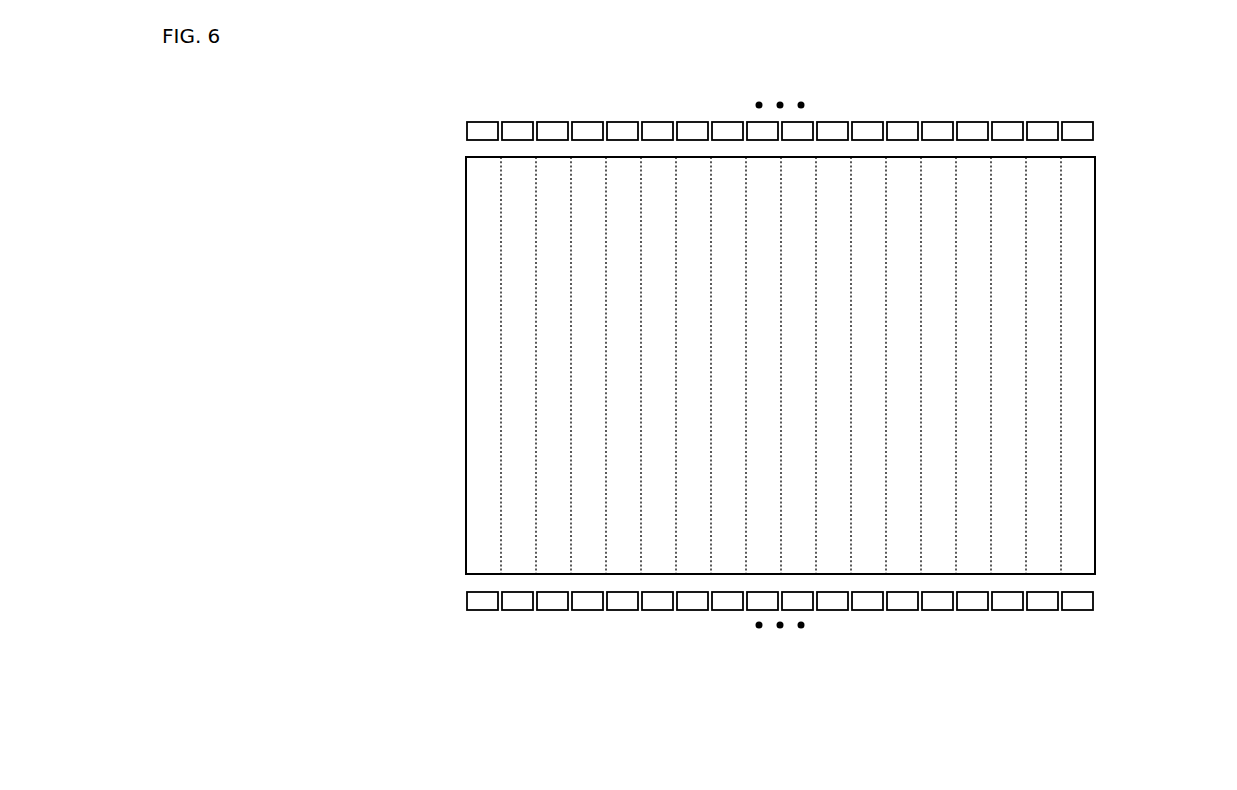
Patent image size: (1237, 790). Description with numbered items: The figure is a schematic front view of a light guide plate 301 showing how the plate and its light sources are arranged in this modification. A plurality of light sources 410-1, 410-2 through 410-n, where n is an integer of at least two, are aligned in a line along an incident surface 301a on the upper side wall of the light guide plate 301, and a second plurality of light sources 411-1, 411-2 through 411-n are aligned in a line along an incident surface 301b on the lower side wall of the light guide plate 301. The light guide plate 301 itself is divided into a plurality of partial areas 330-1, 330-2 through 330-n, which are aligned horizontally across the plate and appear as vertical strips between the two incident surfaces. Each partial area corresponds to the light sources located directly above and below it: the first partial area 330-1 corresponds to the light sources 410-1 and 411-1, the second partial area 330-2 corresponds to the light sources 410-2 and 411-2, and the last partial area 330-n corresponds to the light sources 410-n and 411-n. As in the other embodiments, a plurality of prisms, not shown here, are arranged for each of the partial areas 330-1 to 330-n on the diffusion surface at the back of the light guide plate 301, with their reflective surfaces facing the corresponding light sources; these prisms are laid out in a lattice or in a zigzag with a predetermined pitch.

The light guide plate 301 is at (1129, 509).
The incident surface 301a is at (1082, 157).
The incident surface 301b is at (1078, 575).
The partial area 330-1 is at (478, 325).
The partial area 330-2 is at (510, 378).
The partial area 330-n is at (1082, 325).
The light source 410-1 is at (483, 122).
The light source 410-2 is at (517, 122).
The light source 410-n is at (1076, 122).
The light source 411-1 is at (483, 610).
The light source 411-2 is at (518, 610).
The light source 411-n is at (1077, 610).